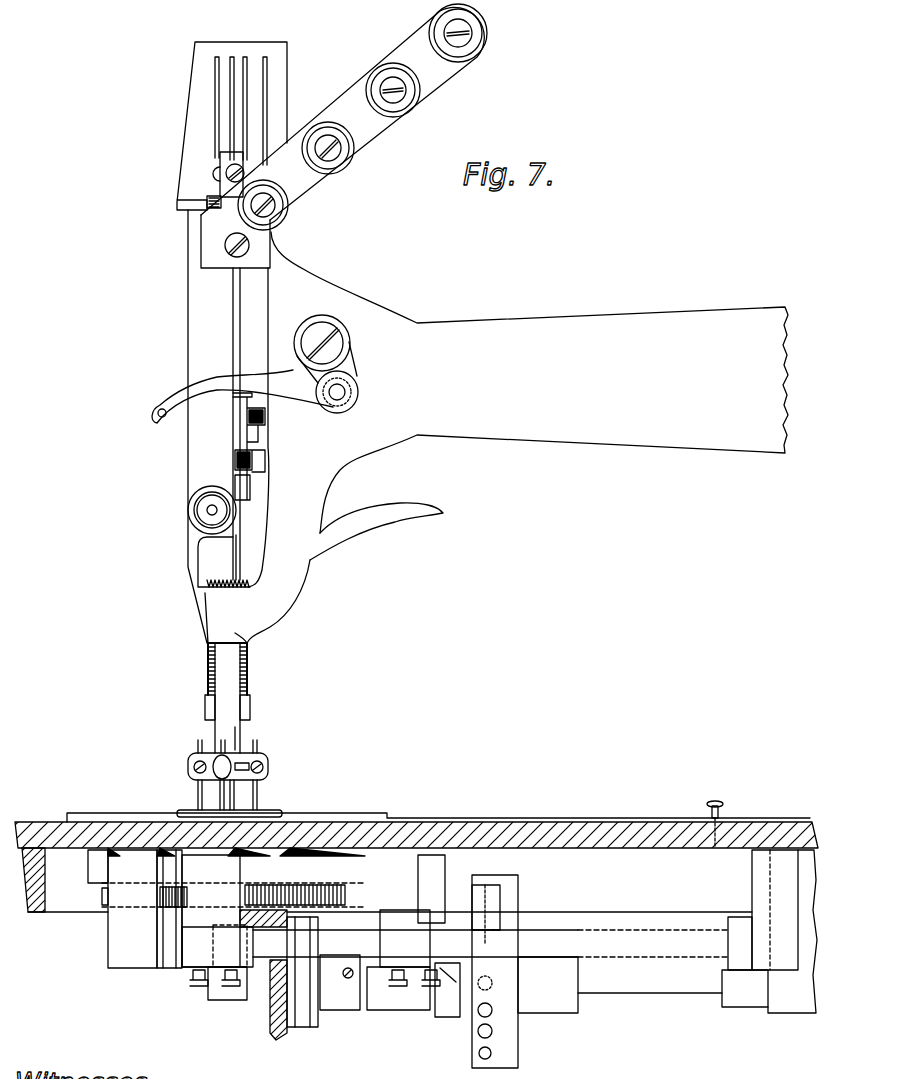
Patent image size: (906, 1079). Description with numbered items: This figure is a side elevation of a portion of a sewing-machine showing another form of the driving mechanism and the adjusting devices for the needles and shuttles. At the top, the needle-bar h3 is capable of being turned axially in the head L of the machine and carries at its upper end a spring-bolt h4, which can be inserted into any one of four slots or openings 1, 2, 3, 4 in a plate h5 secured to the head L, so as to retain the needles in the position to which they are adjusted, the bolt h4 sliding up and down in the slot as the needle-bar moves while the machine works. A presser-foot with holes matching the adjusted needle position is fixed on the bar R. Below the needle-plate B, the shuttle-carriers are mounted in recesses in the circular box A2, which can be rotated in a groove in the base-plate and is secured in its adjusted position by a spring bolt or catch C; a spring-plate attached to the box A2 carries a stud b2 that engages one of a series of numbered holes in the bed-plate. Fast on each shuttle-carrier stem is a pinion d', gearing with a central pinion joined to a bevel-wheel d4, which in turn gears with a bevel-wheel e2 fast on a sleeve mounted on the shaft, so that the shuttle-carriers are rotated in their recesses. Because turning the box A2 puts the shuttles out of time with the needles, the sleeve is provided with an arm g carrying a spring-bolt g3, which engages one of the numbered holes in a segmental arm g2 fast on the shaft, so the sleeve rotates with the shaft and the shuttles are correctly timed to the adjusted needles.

The slot or opening 1 is at (265, 57).
The slot or opening 2 is at (245, 57).
The slot or opening 3 is at (232, 57).
The slot or opening 4 is at (217, 57).
The plate h5 is at (195, 114).
The spring-bolt h4 is at (212, 173).
The needle-bar h3 is at (272, 732).
The head L is at (189, 251).
The bar R is at (247, 707).
The needle-plate B is at (270, 813).
The spring bolt or catch C is at (491, 819).
The stud b2 is at (723, 806).
The circular box A2 is at (94, 876).
The pinion d' is at (234, 885).
The bevel-wheel d4 is at (247, 927).
The bevel-wheel e2 is at (272, 1009).
The arm g is at (486, 915).
The segmental arm g2 is at (518, 890).
The spring-bolt g3 is at (490, 982).